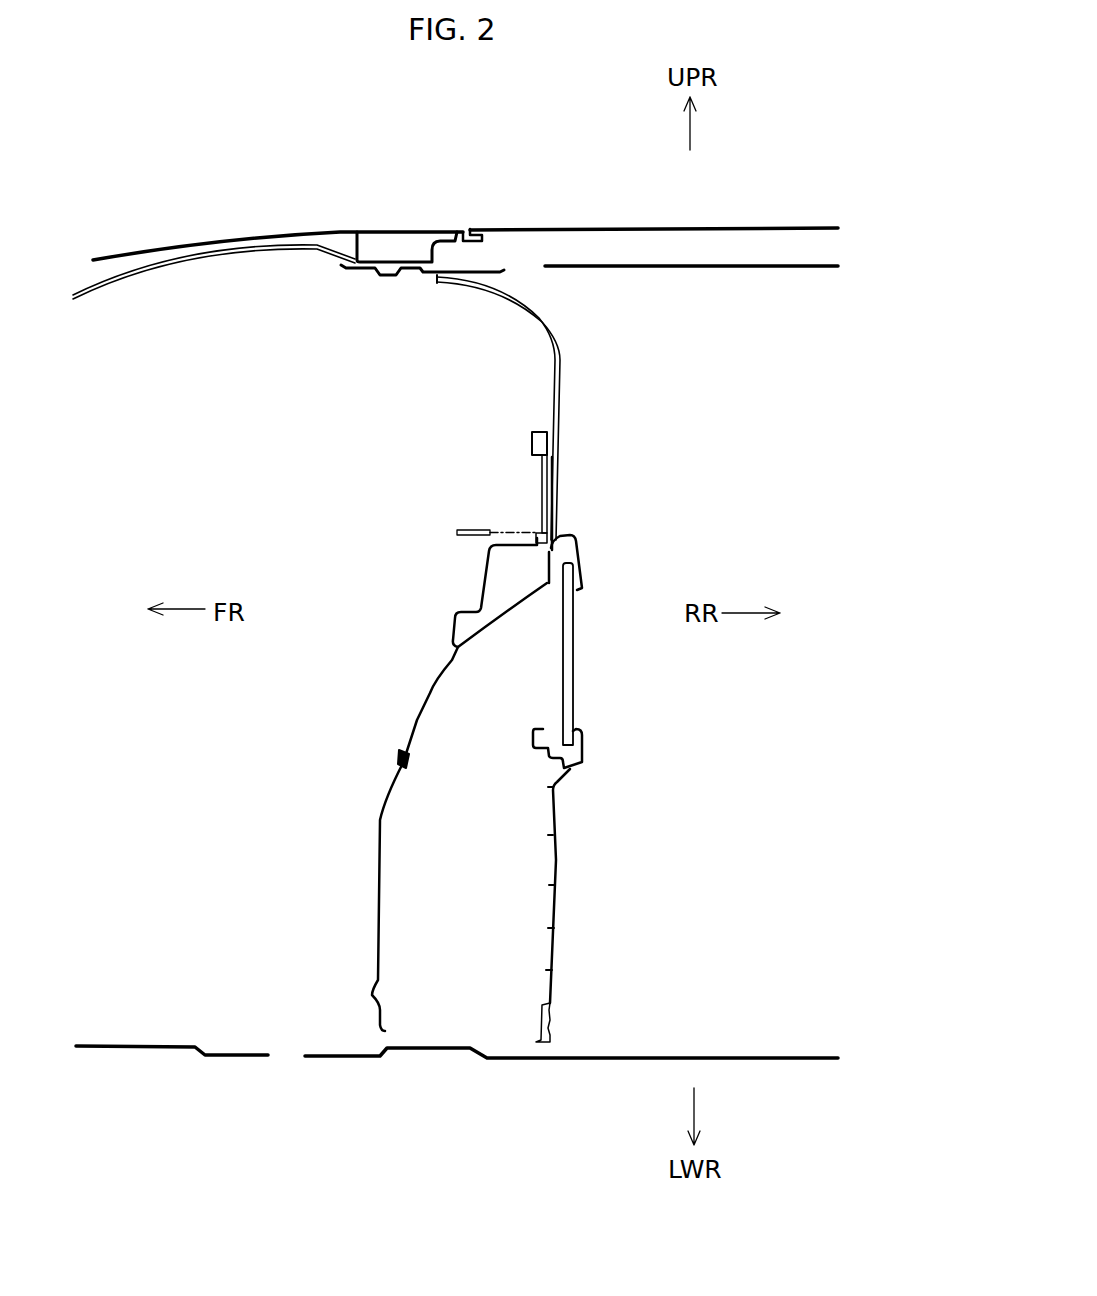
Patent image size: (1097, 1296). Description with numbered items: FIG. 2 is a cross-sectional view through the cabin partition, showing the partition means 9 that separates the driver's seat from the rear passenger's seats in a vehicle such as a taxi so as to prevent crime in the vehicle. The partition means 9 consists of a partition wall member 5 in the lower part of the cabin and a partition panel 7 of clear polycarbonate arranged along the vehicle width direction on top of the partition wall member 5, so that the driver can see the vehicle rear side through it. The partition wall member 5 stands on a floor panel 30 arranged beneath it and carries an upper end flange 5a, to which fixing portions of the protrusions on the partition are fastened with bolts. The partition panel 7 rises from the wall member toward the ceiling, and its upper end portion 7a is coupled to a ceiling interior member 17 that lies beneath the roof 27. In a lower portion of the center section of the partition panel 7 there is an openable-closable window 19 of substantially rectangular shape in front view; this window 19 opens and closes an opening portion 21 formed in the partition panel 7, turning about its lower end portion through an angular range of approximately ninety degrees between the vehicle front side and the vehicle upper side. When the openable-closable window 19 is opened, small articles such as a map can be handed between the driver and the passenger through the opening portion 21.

The partition wall member 5 is at (516, 788).
The upper end flange 5a is at (546, 560).
The partition panel 7 is at (534, 407).
The upper end portion 7a is at (437, 283).
The partition means 9 is at (394, 702).
The ceiling interior member 17 is at (735, 268).
The openable-closable window 19 is at (543, 497).
The opening portion 21 is at (555, 483).
The roof 27 is at (188, 245).
The floor panel 30 is at (705, 1057).